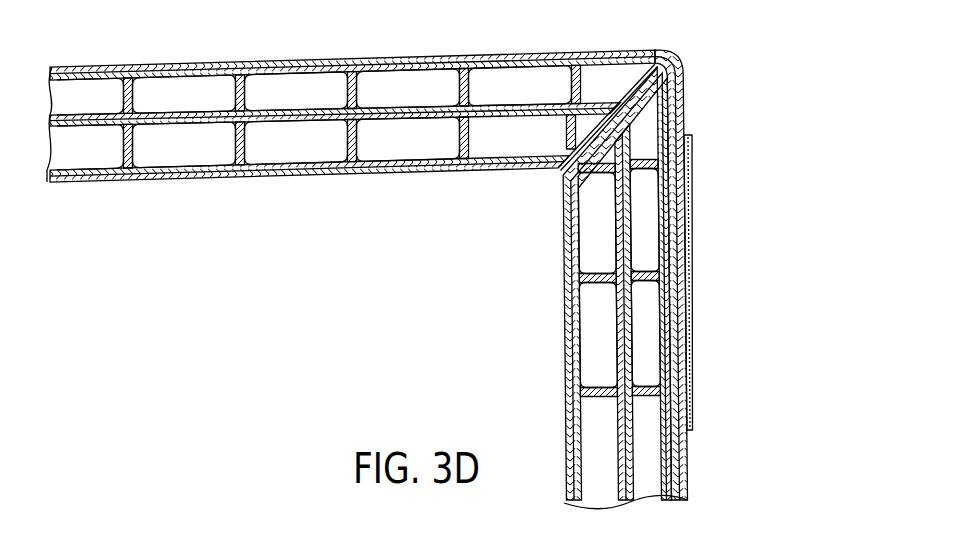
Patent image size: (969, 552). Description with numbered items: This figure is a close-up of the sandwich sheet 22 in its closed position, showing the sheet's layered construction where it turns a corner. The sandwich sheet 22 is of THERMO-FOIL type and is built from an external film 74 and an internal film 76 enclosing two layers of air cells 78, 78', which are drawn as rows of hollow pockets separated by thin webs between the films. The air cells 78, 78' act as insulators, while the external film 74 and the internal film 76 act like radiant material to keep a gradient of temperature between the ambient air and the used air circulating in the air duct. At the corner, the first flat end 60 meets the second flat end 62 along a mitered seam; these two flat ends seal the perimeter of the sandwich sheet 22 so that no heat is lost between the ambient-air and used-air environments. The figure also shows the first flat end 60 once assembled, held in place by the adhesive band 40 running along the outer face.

The sandwich sheet 22 is at (647, 366).
The adhesive band 40 is at (690, 303).
The first flat end 60 is at (684, 110).
The second flat end 62 is at (588, 130).
The external film 74 is at (297, 62).
The internal film 76 is at (300, 172).
The air cells 78 is at (191, 168).
The upper cell 78' is at (192, 65).